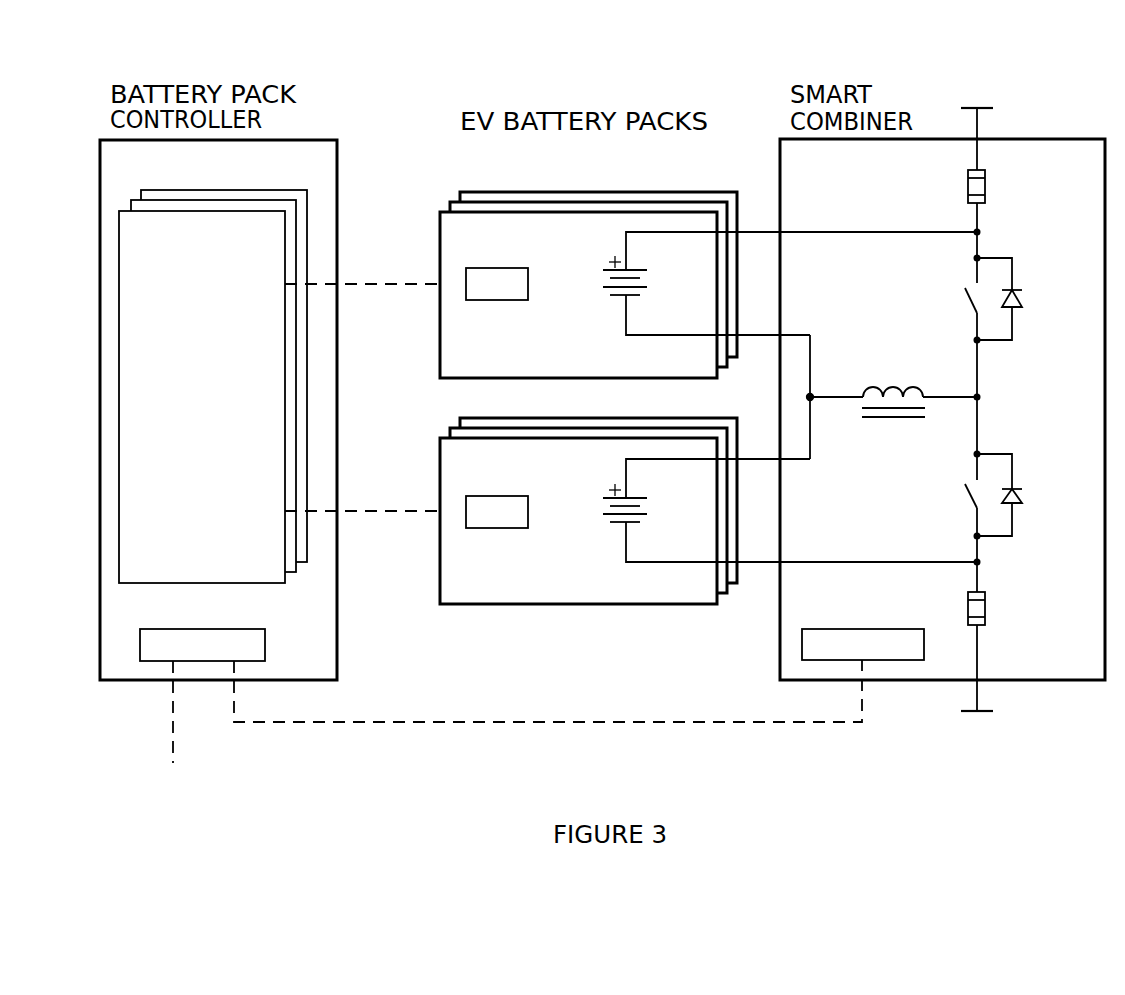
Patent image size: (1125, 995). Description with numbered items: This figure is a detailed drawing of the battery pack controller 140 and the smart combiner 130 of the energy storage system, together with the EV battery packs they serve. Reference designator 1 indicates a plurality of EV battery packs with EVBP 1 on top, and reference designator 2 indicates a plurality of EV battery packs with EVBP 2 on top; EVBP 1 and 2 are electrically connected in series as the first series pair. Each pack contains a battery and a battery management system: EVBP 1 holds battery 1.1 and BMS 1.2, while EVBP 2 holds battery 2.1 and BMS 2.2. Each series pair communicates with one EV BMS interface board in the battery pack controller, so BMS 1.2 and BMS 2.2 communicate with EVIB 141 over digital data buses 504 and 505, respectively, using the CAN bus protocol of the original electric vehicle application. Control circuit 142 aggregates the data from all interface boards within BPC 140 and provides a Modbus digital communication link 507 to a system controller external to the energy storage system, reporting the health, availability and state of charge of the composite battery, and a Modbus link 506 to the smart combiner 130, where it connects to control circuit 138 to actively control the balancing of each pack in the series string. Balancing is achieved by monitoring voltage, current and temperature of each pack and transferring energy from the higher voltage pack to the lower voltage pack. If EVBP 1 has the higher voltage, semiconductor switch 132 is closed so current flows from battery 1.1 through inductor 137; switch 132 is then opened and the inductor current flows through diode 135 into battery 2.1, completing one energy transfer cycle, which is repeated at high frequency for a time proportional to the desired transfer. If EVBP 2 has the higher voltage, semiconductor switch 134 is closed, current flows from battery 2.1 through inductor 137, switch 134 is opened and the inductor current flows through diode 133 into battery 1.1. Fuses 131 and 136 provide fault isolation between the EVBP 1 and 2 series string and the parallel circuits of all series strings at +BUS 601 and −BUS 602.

The battery pack controller 140 is at (157, 172).
The EV BMS interface board 141 is at (172, 242).
The control circuit 142 is at (233, 625).
The smart combiner 130 is at (836, 172).
The fuse 131 is at (1012, 179).
The semiconductor switch 132 is at (941, 321).
The diode 133 is at (1030, 291).
The semiconductor switch 134 is at (941, 517).
The diode 135 is at (1030, 488).
The fuse 136 is at (1012, 600).
The inductor 137 is at (893, 430).
The control circuit 138 is at (863, 615).
The digital data bus 504 is at (375, 252).
The digital data bus 505 is at (375, 478).
The Modbus digital communication link 506 is at (548, 691).
The Modbus digital communication link 507 is at (136, 712).
The +BUS 601 is at (1010, 79).
The −BUS 602 is at (1010, 715).
The EV battery pack 1 is at (465, 243).
The EV battery pack 2 is at (465, 469).
The battery 1.1 is at (790, 283).
The BMS 1.2 is at (528, 297).
The battery 2.1 is at (790, 510).
The BMS 2.2 is at (528, 525).